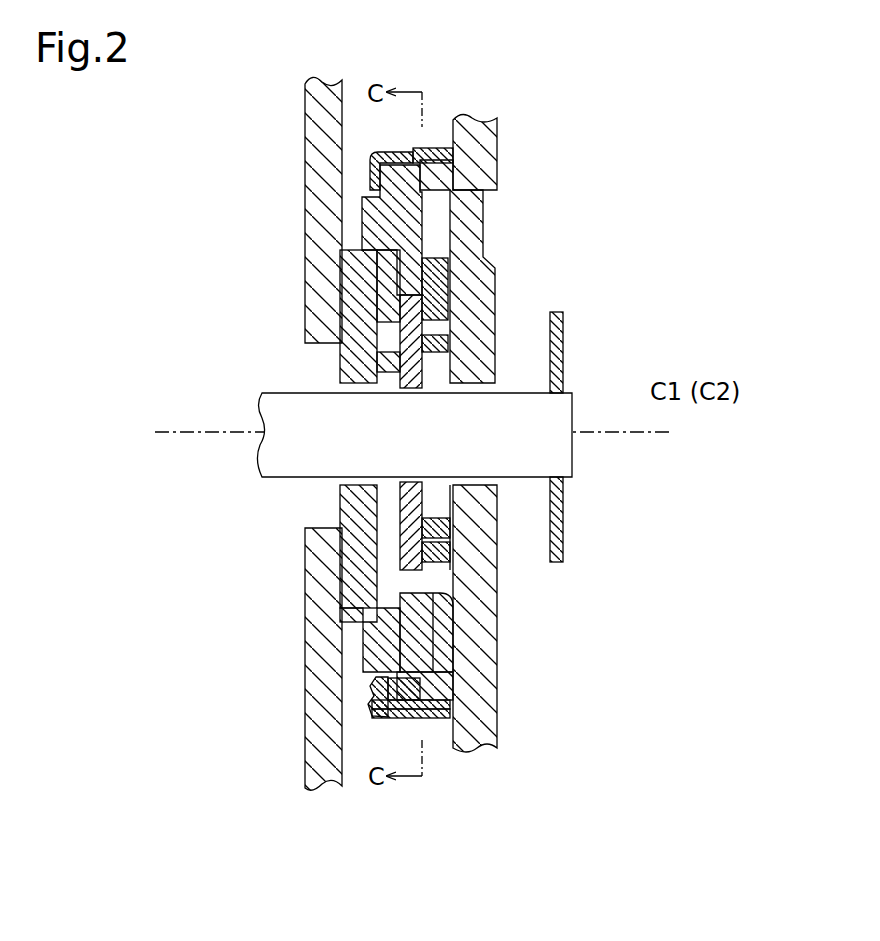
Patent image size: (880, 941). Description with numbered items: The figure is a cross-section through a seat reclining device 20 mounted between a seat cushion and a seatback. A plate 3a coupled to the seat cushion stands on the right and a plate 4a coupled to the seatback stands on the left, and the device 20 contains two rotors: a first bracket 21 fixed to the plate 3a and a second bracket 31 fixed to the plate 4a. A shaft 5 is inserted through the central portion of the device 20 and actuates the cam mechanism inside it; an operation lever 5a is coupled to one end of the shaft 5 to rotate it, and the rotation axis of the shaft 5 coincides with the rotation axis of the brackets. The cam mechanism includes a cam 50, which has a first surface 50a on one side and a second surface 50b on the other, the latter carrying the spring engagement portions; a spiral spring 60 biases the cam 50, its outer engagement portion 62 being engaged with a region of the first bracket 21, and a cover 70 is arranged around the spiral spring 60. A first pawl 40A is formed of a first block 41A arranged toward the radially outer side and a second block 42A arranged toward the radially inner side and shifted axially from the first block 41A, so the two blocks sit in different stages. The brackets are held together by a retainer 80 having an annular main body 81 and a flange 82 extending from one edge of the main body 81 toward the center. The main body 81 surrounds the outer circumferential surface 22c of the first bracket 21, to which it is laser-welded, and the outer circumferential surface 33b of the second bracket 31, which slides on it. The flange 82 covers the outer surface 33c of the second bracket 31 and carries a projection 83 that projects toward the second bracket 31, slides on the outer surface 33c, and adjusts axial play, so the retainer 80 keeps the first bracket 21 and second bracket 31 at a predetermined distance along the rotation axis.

The seat reclining device 20 is at (438, 110).
The shaft 5 is at (572, 462).
The operation lever 5a is at (565, 541).
The plate 4a is at (305, 106).
The plate 3a is at (497, 137).
The first bracket 21 is at (483, 222).
The outer circumferential surface 22c is at (472, 704).
The second bracket 31 is at (348, 320).
The outer circumferential surface 33b is at (410, 718).
The outer surface 33c is at (372, 658).
The first pawl 40A is at (232, 220).
The first block 41A is at (405, 218).
The second block 42A is at (382, 268).
The cam 50 is at (411, 392).
The first surface 50a is at (400, 383).
The second surface 50b is at (422, 383).
The spiral spring 60 is at (440, 330).
The outer engagement portion 62 is at (438, 284).
The cover 70 is at (455, 504).
The retainer 80 is at (247, 693).
The main body 81 is at (392, 724).
The flange 82 is at (385, 705).
The projection 83 is at (378, 688).